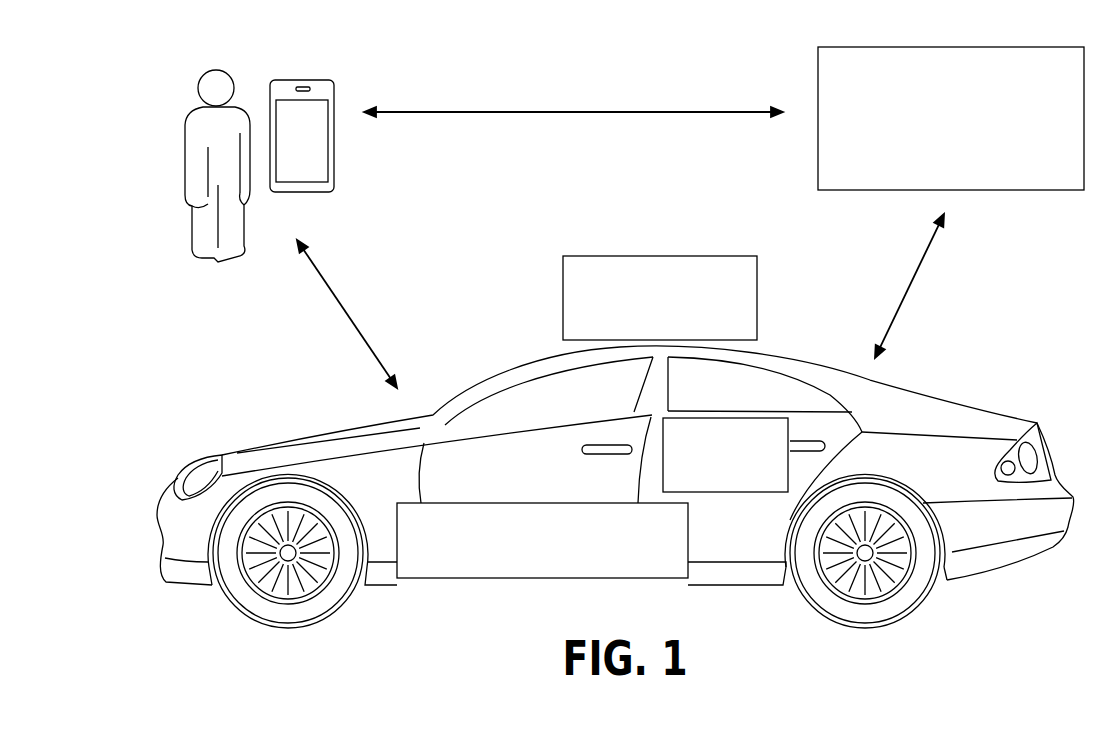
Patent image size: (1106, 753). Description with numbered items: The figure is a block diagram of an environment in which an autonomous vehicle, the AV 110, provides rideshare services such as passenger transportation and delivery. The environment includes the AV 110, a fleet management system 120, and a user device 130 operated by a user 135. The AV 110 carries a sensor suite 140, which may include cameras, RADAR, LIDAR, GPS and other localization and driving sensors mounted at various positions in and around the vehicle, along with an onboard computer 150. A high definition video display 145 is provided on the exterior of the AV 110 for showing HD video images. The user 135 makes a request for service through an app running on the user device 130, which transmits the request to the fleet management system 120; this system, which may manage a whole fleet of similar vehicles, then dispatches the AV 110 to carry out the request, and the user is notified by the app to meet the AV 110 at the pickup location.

The AV 110 is at (957, 540).
The fleet management system 120 is at (933, 158).
The user device 130 is at (283, 147).
The user 135 is at (213, 263).
The sensor suite 140 is at (641, 327).
The HD video display 145 is at (758, 418).
The onboard computer 150 is at (528, 564).